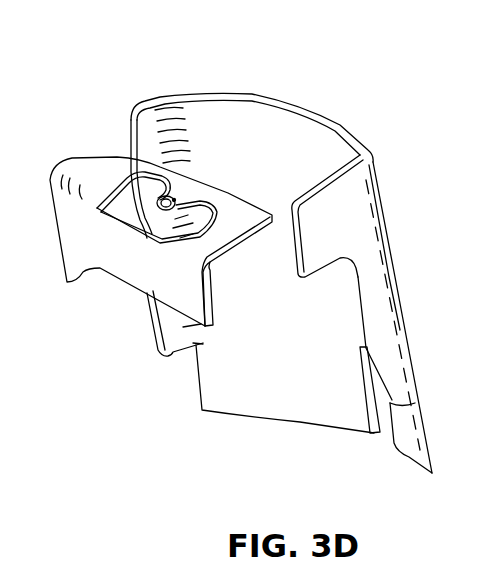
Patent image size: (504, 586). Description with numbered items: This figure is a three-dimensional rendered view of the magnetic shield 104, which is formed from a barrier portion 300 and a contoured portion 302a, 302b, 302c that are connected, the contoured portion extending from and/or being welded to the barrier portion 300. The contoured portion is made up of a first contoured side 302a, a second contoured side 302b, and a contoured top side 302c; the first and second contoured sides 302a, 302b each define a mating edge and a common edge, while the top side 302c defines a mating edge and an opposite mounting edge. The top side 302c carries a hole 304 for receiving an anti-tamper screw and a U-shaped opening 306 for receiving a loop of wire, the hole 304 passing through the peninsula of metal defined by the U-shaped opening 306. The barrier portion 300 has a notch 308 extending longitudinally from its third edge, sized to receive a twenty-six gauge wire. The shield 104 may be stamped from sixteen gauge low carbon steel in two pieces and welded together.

The barrier portion 300 is at (283, 103).
The first contoured side 302a is at (163, 338).
The second contoured side 302b is at (372, 258).
The contoured top side 302c is at (97, 242).
The hole 304 is at (165, 178).
The U-shaped opening 306 is at (127, 202).
The notch 308 is at (386, 417).
The magnetic shield 104 is at (202, 412).